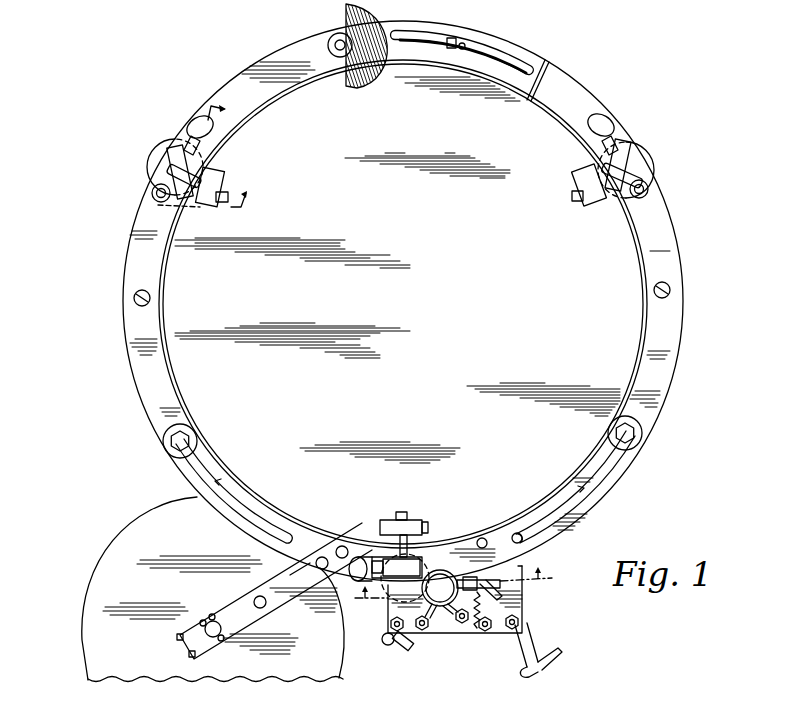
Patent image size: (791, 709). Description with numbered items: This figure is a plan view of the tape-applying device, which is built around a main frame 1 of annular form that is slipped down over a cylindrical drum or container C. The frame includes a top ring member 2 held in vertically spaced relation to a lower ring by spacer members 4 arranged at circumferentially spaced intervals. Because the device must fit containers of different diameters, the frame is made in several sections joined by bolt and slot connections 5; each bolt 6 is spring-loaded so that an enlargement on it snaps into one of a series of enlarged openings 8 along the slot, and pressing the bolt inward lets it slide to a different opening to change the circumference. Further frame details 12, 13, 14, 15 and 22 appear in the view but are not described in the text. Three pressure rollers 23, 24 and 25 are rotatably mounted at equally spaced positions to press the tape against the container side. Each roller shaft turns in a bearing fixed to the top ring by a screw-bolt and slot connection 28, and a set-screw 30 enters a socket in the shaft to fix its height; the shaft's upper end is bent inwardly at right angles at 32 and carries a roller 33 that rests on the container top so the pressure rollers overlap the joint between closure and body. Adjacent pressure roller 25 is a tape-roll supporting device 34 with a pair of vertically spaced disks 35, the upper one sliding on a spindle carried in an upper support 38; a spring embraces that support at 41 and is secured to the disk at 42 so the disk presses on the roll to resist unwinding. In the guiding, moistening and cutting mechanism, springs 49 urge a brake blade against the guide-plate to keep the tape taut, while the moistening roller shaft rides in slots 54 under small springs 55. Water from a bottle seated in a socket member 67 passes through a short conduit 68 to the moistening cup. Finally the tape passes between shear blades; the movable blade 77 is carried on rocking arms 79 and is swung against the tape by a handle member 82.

The main frame 1 is at (574, 82).
The top ring member 2 is at (580, 106).
The glass/transparent panel C is at (590, 337).
The spacer members 4 is at (670, 290).
The bolt and slot connections 5 is at (195, 460).
The bolt 6 is at (178, 442).
The enlarged openings 8 is at (215, 486).
The hub 12 is at (328, 45).
The ring segment joint 13 is at (546, 58).
The pin 14 is at (453, 63).
The arcuate slot 15 is at (430, 38).
The dome cap 22 is at (350, 18).
The pressure roller 23 is at (633, 155).
The pressure roller 24 is at (160, 148).
The pressure roller 25 is at (430, 550).
The screw-bolt and slot connection 28 is at (152, 195).
The set-screw 30 is at (194, 124).
The inwardly bent upper end of shaft 32 is at (641, 170).
The roller 33 is at (209, 206).
The tape-roll supporting device 34 is at (292, 566).
The disks 35 is at (94, 630).
The support 38 is at (297, 583).
The embracing end of spring member 41 is at (177, 637).
The spring attachment to disk 42 is at (205, 620).
The springs 49 is at (394, 645).
The slots 54 is at (490, 602).
The small springs 55 is at (477, 628).
The socket member 67 is at (441, 606).
The short conduit 68 is at (522, 567).
The blade 77 is at (560, 655).
The arms 79 is at (526, 630).
The handle member 82 is at (524, 675).